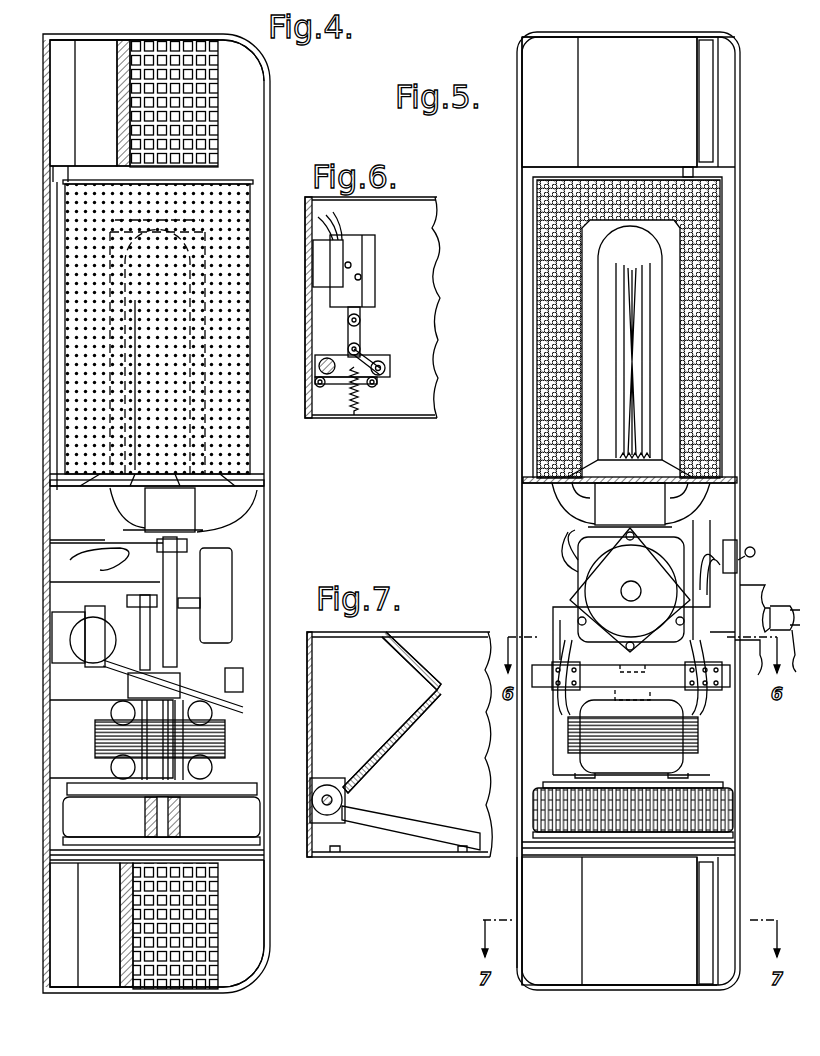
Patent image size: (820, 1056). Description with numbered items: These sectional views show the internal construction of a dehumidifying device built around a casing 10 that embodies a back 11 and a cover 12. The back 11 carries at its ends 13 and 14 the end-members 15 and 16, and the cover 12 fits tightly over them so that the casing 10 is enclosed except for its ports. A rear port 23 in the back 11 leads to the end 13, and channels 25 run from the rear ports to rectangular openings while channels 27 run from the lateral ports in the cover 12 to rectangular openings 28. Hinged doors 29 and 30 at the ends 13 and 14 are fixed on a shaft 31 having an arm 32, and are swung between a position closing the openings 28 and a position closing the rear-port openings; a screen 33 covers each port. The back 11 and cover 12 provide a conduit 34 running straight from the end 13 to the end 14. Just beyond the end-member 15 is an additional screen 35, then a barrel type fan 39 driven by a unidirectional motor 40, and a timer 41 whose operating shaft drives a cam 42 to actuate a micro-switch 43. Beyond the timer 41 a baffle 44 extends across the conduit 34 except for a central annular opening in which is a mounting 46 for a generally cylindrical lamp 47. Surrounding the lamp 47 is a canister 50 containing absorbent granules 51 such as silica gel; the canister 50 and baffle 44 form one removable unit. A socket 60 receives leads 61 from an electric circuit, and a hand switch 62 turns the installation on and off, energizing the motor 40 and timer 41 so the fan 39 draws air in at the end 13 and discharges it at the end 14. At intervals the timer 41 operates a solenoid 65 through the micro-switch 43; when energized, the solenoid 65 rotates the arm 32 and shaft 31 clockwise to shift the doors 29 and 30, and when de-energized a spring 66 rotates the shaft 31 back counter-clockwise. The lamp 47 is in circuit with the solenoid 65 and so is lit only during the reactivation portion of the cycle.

In FIG. 4, the casing 10 is at (272, 462).
In FIG. 5, the casing 10 is at (517, 420).
In FIG. 4, the back 11 is at (46, 392).
In FIG. 5, the back 11 is at (540, 590).
In FIG. 4, the cover 12 is at (276, 905).
In FIG. 5, the cover 12 is at (519, 890).
In FIG. 4, the end 13 is at (178, 998).
In FIG. 5, the end 13 is at (618, 995).
In FIG. 4, the end 14 is at (136, 38).
In FIG. 5, the end 14 is at (553, 39).
In FIG. 4, the end-member 15 is at (252, 939).
In FIG. 4, the end-member 16 is at (245, 133).
In FIG. 7, the rear port 23 is at (312, 707).
In FIG. 7, the channel 25 is at (417, 670).
In FIG. 7, the channel 27 is at (423, 838).
In FIG. 7, the rectangular opening 28 is at (405, 820).
In FIG. 5, the rectangular opening 28 is at (706, 120).
In FIG. 4, the hinged door 29 is at (128, 918).
In FIG. 7, the hinged door 29 is at (400, 740).
In FIG. 5, the hinged door 29 is at (609, 921).
In FIG. 4, the hinged door 30 is at (124, 100).
In FIG. 5, the hinged door 30 is at (609, 102).
In FIG. 6, the shaft 31 is at (318, 362).
In FIG. 6, the arm 32 is at (318, 380).
In FIG. 4, the screen 33 is at (198, 905).
In FIG. 4, the conduit 34 is at (268, 512).
In FIG. 5, the conduit 34 is at (540, 530).
In FIG. 4, the additional screen 35 is at (222, 852).
In FIG. 4, the fan 39 is at (72, 822).
In FIG. 5, the fan 39 is at (738, 815).
In FIG. 4, the motor 40 is at (215, 752).
In FIG. 5, the motor 40 is at (705, 745).
In FIG. 4, the timer 41 is at (226, 566).
In FIG. 5, the timer 41 is at (626, 590).
In FIG. 4, the cam 42 is at (142, 617).
In FIG. 4, the micro-switch 43 is at (138, 571).
In FIG. 4, the baffle 44 is at (156, 490).
In FIG. 5, the baffle 44 is at (740, 486).
In FIG. 4, the mounting 46 is at (183, 510).
In FIG. 5, the mounting 46 is at (631, 505).
In FIG. 4, the lamp 47 is at (198, 383).
In FIG. 5, the lamp 47 is at (630, 343).
In FIG. 5, the canister 50 is at (738, 370).
In FIG. 5, the absorbent granules 51 is at (735, 181).
In FIG. 5, the socket 60 is at (760, 645).
In FIG. 5, the leads 61 is at (762, 586).
In FIG. 5, the hand switch 62 is at (745, 550).
In FIG. 4, the solenoid 65 is at (85, 646).
In FIG. 6, the solenoid 65 is at (370, 280).
In FIG. 6, the spring 66 is at (360, 397).